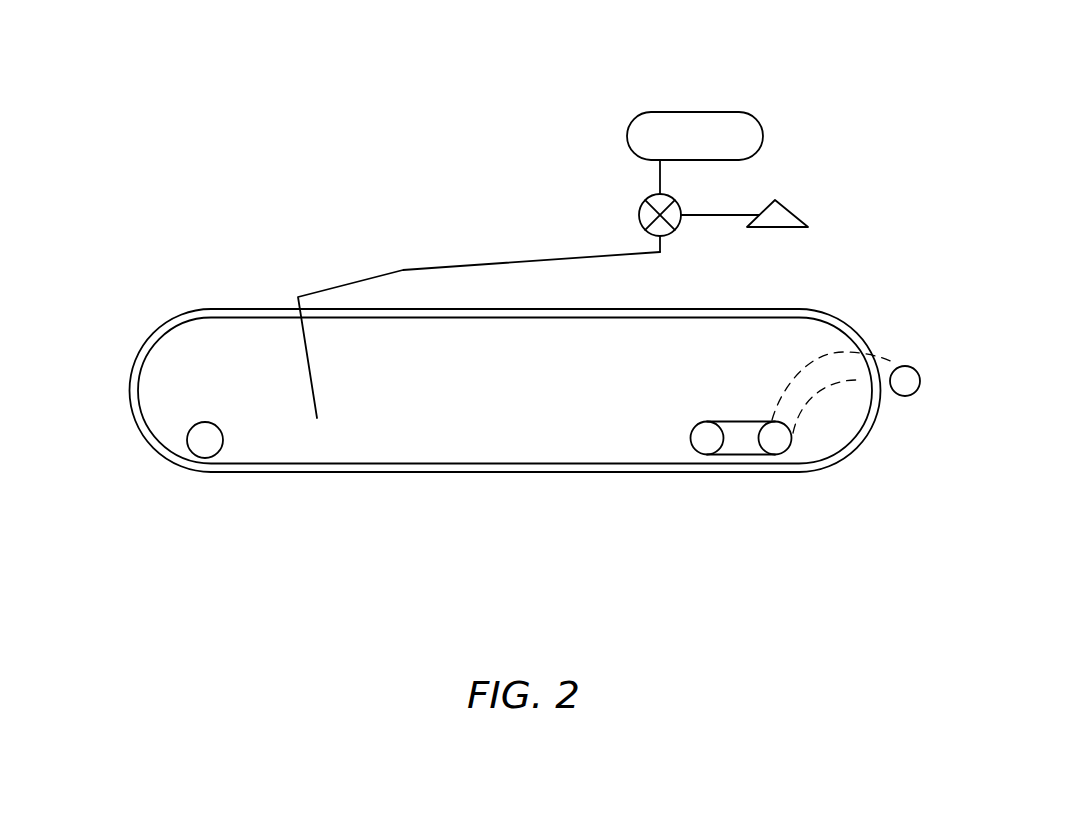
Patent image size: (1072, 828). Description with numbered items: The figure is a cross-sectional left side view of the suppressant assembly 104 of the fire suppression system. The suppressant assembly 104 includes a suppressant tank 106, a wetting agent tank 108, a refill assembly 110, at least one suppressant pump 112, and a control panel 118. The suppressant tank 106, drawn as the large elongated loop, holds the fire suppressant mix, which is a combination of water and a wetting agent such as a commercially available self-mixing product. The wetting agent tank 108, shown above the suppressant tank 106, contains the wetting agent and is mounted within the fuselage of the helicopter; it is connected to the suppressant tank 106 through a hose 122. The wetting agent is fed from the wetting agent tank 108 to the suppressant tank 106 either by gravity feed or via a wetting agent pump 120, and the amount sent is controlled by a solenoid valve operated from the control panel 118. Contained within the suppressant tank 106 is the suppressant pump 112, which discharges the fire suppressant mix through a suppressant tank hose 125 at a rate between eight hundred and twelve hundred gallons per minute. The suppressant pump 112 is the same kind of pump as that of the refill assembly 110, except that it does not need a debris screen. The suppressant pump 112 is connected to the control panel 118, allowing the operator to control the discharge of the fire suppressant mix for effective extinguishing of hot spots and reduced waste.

The suppressant assembly 104 is at (909, 339).
The suppressant tank 106 is at (158, 370).
The wetting agent tank 108 is at (692, 127).
The refill assembly 110 is at (191, 459).
The suppressant pump 112 is at (686, 442).
The control panel 118 is at (795, 212).
The wetting agent pump 120 is at (641, 208).
The hose 122 is at (362, 282).
The suppressant tank hose 125 is at (857, 392).